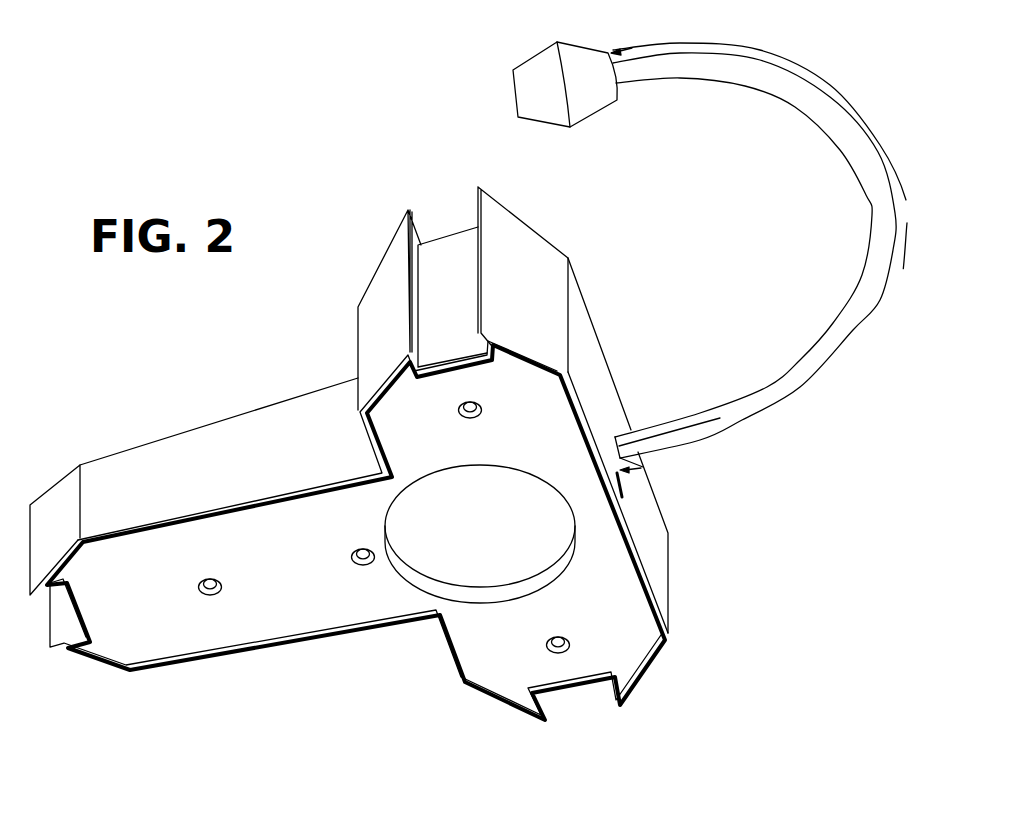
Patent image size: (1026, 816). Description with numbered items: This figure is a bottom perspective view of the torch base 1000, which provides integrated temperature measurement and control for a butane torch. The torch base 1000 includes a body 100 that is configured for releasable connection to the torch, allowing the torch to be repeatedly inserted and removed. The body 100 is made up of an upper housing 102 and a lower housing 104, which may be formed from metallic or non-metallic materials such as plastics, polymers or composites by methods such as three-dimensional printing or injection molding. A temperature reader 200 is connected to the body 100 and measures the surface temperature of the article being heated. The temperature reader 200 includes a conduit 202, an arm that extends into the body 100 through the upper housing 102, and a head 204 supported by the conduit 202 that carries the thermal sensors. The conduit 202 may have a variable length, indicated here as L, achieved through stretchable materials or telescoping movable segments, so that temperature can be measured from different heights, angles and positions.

The torch base 1000 is at (361, 153).
The body 100 is at (165, 388).
The upper housing 102 is at (255, 400).
The lower housing 104 is at (203, 652).
The temperature reader 200 is at (814, 35).
The conduit 202 is at (848, 169).
The head 204 is at (587, 30).